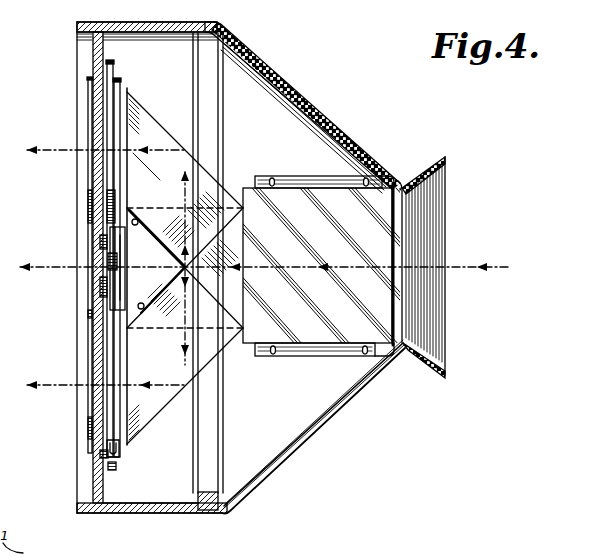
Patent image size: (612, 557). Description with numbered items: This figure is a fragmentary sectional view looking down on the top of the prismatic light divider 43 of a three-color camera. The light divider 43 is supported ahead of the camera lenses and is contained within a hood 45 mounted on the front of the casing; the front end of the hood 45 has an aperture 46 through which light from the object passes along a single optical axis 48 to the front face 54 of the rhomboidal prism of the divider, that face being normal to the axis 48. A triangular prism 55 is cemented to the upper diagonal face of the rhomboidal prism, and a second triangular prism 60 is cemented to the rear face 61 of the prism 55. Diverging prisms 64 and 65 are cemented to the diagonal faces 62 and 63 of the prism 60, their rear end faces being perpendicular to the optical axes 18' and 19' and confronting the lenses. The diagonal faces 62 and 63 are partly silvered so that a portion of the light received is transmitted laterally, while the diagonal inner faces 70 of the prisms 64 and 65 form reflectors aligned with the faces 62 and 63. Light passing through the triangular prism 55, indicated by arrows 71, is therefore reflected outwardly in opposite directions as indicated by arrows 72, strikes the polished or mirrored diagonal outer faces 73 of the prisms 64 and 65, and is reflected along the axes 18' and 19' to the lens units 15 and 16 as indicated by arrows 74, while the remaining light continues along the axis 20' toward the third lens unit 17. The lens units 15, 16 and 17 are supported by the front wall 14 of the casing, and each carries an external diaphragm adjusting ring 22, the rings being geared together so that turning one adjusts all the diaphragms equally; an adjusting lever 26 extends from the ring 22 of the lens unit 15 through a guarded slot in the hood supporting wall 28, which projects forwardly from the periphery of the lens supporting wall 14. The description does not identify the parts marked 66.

The front wall 14 is at (110, 491).
The lens unit 15 is at (86, 438).
The lens unit 16 is at (86, 99).
The lens unit 17 is at (98, 278).
The optical axis 18' is at (105, 401).
The optical axis 19' is at (106, 137).
The optical axis 20' is at (264, 253).
The ring 22 is at (112, 62).
The adjusting lever 26 is at (100, 456).
The hood supporting wall 28 is at (173, 514).
The prismatic light divider 43 is at (305, 193).
The hood 45 is at (298, 446).
The aperture 46 is at (447, 189).
The optical axis 48 is at (457, 266).
The front face 54 is at (394, 320).
The triangular prism 55 is at (349, 266).
The triangular prism 60 is at (233, 302).
The rear face 61 is at (243, 230).
The diagonal face 62 is at (243, 338).
The diagonal face 63 is at (241, 215).
The diverging prism 64 is at (158, 412).
The diverging prism 65 is at (196, 192).
The mirror coating 66 is at (129, 96).
The diagonal inner face 70 is at (138, 222).
The arrow 71 is at (318, 269).
The arrow 72 is at (182, 285).
The diagonal outer face 73 is at (160, 124).
The arrow 74 is at (40, 152).